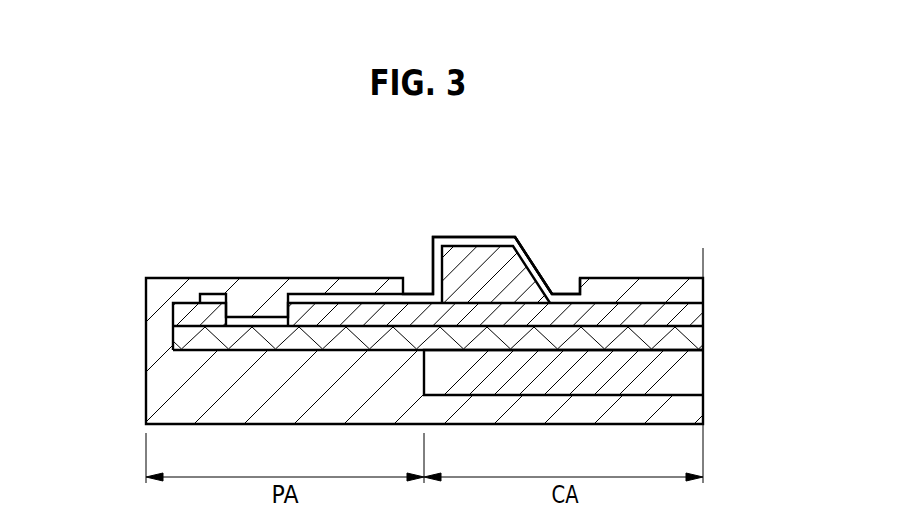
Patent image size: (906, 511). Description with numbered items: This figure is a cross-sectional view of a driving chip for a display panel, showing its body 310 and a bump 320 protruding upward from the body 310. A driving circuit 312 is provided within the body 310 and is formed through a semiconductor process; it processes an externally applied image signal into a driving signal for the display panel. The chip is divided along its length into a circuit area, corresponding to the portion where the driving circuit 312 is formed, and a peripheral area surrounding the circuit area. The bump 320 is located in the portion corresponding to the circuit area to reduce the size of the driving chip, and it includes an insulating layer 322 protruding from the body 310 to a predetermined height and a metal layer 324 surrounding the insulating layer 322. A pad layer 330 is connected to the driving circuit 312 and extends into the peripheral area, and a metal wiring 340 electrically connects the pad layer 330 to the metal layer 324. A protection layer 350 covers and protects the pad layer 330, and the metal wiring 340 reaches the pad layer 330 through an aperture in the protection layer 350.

The body 310 is at (157, 339).
The driving circuit 312 is at (685, 378).
The bump 320 is at (497, 225).
The insulating layer 322 is at (478, 253).
The metal layer 324 is at (546, 243).
The pad layer 330 is at (688, 353).
The metal wiring 340 is at (328, 302).
The protection layer 350 is at (687, 312).